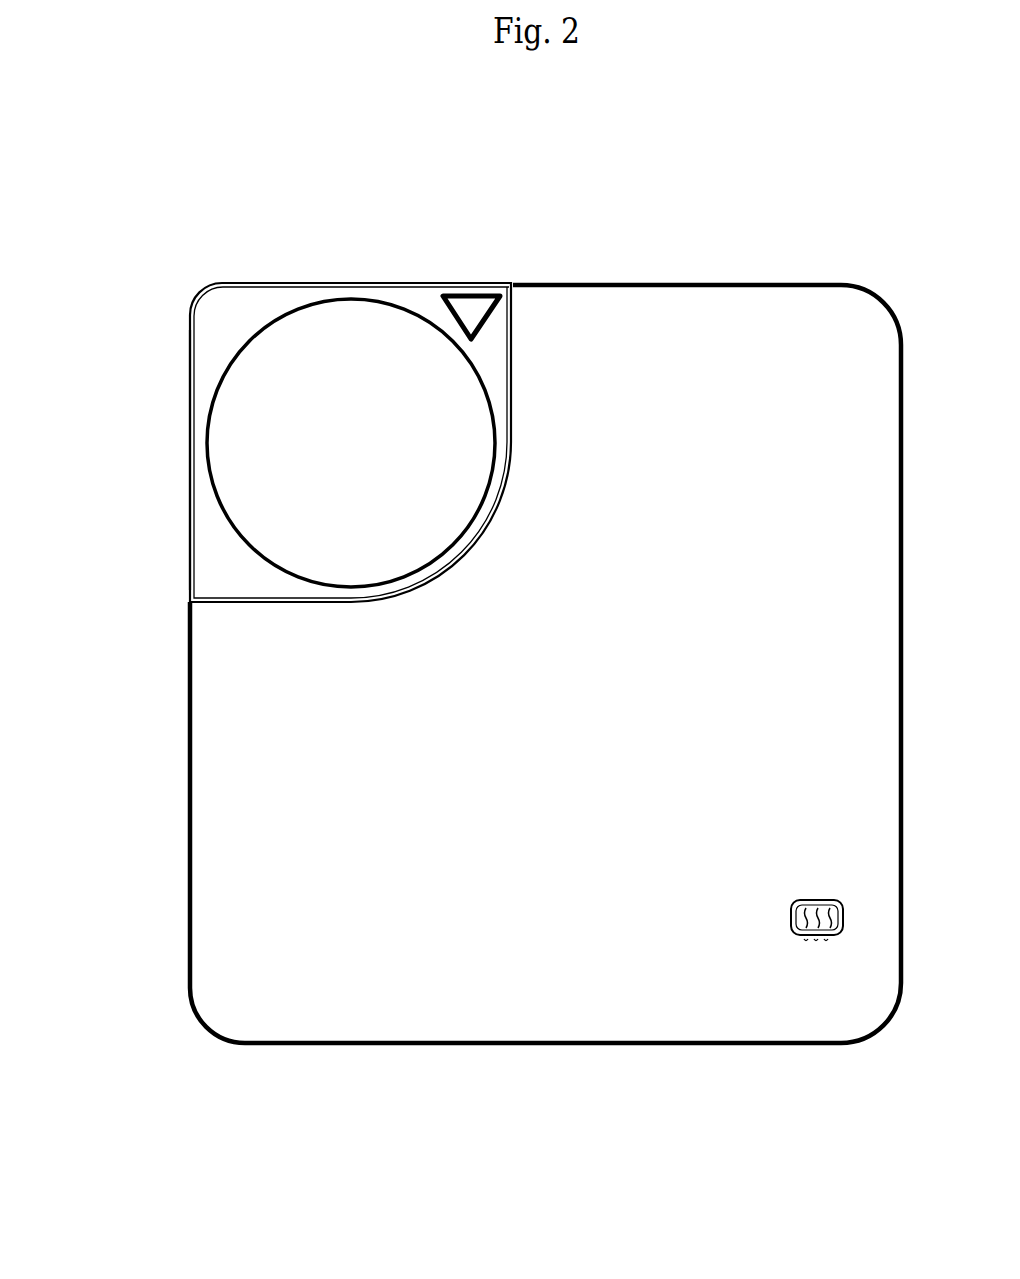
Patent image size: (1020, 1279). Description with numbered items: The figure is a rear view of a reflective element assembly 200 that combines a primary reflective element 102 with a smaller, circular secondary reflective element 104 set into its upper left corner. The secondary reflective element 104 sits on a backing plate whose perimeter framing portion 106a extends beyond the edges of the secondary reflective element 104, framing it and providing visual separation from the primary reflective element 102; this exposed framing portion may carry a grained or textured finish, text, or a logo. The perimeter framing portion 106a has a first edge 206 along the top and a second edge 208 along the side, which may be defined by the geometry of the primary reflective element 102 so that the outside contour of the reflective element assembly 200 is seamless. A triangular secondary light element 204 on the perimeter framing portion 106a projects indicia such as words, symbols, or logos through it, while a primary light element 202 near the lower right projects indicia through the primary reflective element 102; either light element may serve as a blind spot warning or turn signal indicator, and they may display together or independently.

The reflective element assembly 200 is at (278, 228).
The primary reflective element 102 is at (753, 360).
The secondary reflective element 104 is at (285, 483).
The perimeter framing portion 106a is at (218, 340).
The primary light element 202 is at (812, 938).
The secondary light element 204 is at (464, 310).
The first edge 206 is at (400, 283).
The second edge 208 is at (187, 445).